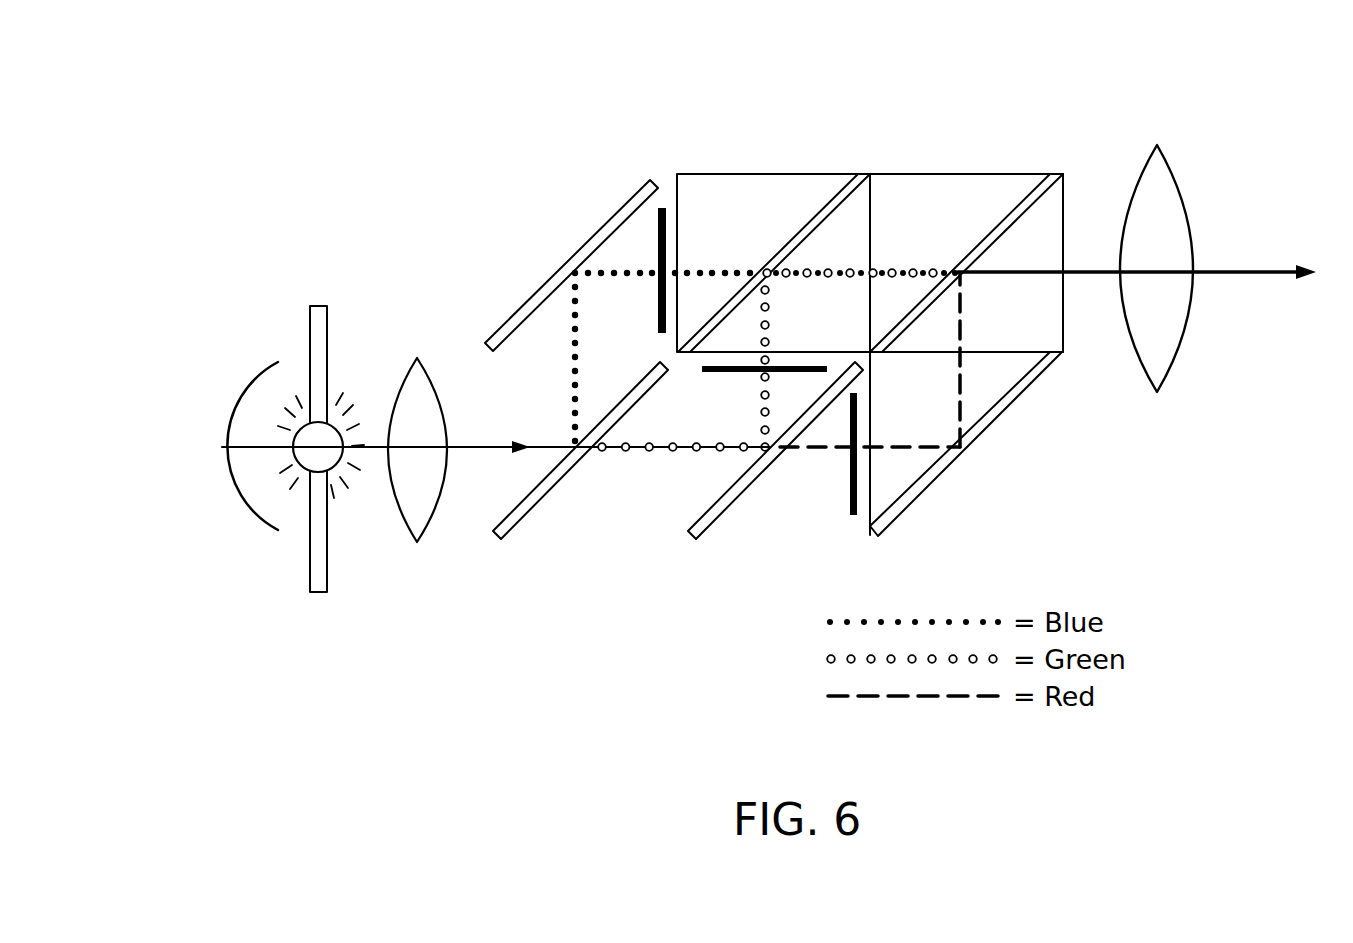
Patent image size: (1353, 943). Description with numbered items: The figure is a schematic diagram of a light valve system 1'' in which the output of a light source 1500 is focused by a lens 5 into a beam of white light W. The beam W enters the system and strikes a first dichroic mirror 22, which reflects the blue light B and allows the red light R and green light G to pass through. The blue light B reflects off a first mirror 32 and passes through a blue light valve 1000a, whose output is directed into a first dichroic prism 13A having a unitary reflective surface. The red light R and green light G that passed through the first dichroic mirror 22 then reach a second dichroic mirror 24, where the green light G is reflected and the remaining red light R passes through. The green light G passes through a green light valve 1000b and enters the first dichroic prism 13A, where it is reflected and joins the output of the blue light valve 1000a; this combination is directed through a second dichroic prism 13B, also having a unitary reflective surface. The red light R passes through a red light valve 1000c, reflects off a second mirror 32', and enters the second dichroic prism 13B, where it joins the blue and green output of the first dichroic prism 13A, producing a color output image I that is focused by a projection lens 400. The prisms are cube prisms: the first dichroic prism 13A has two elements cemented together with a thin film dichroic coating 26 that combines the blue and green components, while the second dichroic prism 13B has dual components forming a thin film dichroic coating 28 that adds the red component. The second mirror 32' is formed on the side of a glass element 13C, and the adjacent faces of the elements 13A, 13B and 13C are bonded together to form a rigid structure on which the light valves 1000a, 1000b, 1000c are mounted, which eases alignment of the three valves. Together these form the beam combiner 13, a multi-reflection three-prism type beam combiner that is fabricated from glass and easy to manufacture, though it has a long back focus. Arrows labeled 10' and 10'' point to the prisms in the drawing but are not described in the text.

The light source 1500 is at (365, 275).
The lens 5 is at (408, 513).
The beam of white light W is at (486, 447).
The first mirror 32 is at (571, 260).
The first dichroic mirror 22 is at (522, 512).
The second dichroic mirror 24 is at (717, 512).
The second mirror 32' is at (966, 444).
The beam combiner 13 is at (1063, 212).
The first dichroic prism 13A is at (753, 222).
The second dichroic prism 13B is at (1004, 213).
The glass element 13C is at (1025, 390).
The thin film dichroic coating 26 is at (836, 192).
The thin film dichroic coating 28 is at (1026, 194).
The light valve 10' is at (745, 128).
The light valve 10'' is at (929, 128).
The light valve system 1'' is at (799, 62).
The blue light valve 1000a is at (658, 226).
The green light valve 1000b is at (727, 373).
The red light valve 1000c is at (850, 481).
The blue light B is at (574, 358).
The green light G is at (768, 330).
The red light R is at (958, 401).
The color output image I is at (1100, 277).
The projection lens 400 is at (1162, 330).